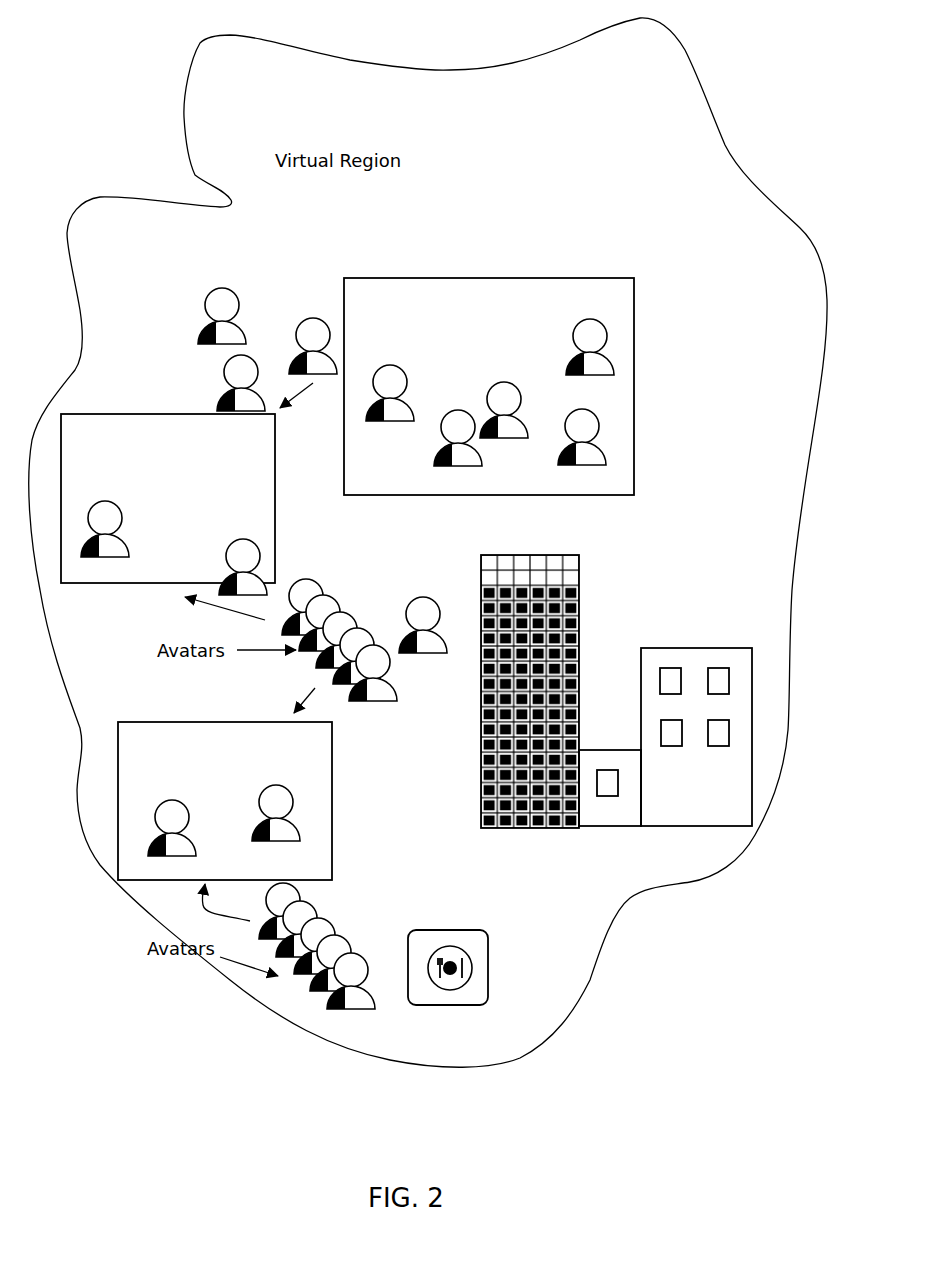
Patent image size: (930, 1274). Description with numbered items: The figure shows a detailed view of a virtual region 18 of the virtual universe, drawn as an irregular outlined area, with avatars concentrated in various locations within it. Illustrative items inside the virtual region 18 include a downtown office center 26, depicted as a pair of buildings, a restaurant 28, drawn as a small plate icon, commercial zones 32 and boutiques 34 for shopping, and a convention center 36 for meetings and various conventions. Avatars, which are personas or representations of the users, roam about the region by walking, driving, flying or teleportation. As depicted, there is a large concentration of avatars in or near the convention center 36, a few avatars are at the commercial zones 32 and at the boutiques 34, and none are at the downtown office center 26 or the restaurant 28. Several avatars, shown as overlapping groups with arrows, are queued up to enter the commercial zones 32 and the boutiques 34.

The virtual region 18 is at (186, 148).
The commercial zones 32 is at (198, 414).
The boutiques 34 is at (206, 722).
The convention center 36 is at (460, 497).
The downtown office center 26 is at (670, 648).
The restaurant 28 is at (450, 930).